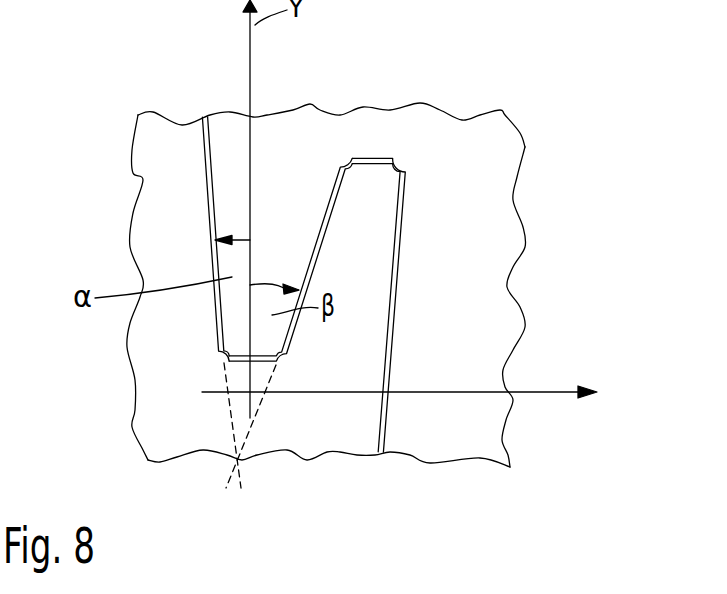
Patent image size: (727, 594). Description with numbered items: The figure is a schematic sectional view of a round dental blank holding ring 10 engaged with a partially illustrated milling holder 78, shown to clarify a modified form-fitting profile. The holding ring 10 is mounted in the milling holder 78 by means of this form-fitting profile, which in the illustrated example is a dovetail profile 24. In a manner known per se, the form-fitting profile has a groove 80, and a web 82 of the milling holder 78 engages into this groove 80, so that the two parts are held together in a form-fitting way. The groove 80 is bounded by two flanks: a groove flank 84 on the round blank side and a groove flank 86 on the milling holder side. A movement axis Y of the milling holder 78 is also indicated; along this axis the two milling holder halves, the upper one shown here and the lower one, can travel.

The dental blank holding ring 10 is at (330, 428).
The dovetail profile 24 is at (368, 252).
The milling holder 78 is at (493, 187).
The groove 80 is at (276, 150).
The web 82 is at (312, 203).
The groove flank on the round blank side 84 is at (216, 147).
The groove flank on the milling holder side 86 is at (300, 240).